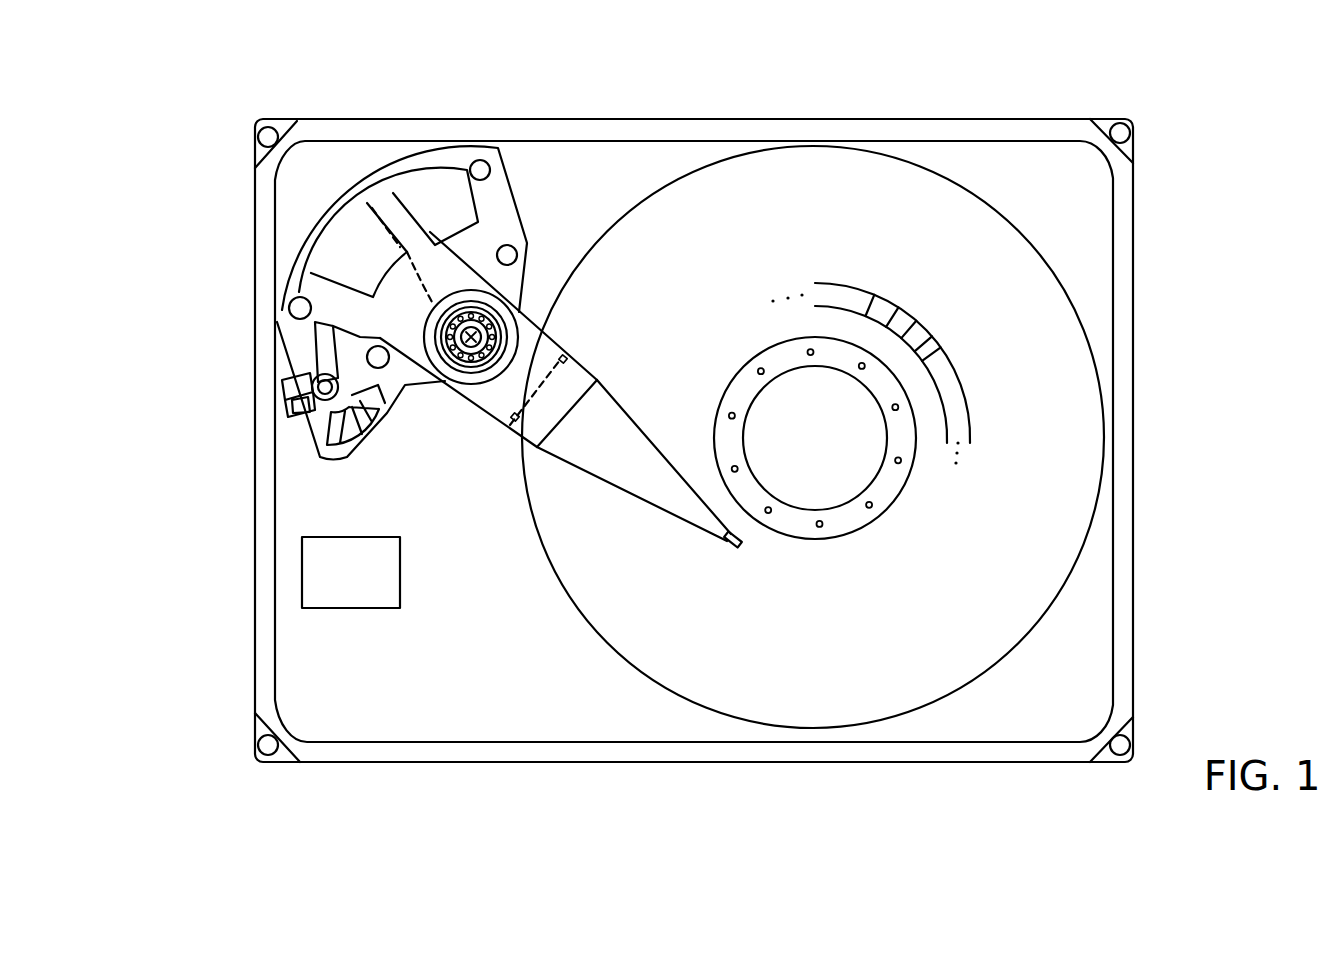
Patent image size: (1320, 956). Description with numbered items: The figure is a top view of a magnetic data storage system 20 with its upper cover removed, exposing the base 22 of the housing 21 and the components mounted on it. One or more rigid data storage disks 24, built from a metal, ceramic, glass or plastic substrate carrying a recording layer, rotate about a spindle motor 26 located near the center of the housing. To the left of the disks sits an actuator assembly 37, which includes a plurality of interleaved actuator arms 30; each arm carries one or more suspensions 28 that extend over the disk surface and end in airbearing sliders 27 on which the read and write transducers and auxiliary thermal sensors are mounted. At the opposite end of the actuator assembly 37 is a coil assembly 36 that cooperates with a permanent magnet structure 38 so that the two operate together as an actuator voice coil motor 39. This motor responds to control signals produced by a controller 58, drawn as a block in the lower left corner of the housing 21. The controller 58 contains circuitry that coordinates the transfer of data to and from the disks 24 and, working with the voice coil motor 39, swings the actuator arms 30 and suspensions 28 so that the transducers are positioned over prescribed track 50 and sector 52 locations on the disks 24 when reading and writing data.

The magnetic data storage system 20 is at (620, 81).
The housing 21 is at (533, 755).
The base 22 is at (408, 753).
The rigid data storage disk 24 is at (834, 241).
The spindle motor 26 is at (843, 468).
The airbearing slider 27 is at (742, 553).
The suspension 28 is at (602, 458).
The actuator arm 30 is at (492, 404).
The coil assembly 36 is at (353, 202).
The actuator assembly 37 is at (437, 402).
The permanent magnet structure 38 is at (492, 193).
The voice coil motor 39 is at (452, 247).
The track 50 is at (960, 404).
The sector 52 is at (935, 349).
The controller 58 is at (312, 578).